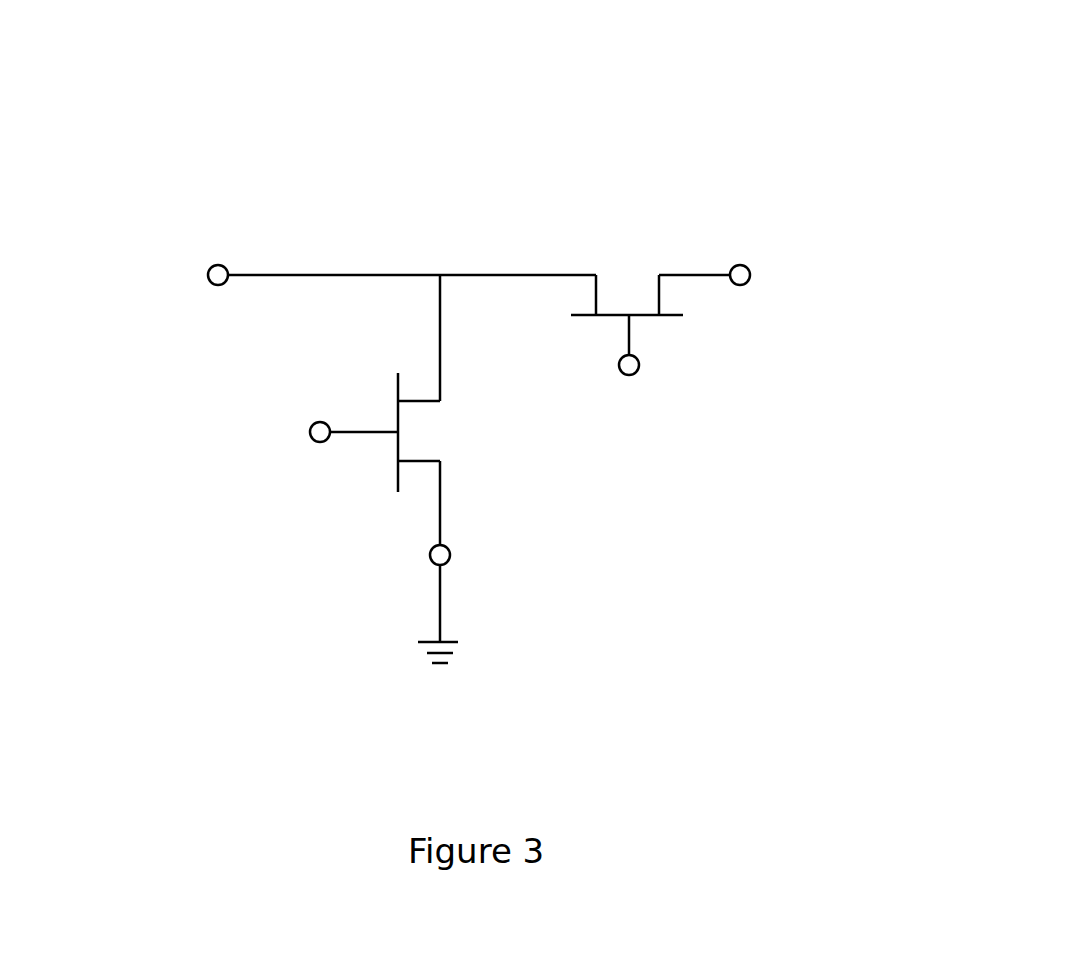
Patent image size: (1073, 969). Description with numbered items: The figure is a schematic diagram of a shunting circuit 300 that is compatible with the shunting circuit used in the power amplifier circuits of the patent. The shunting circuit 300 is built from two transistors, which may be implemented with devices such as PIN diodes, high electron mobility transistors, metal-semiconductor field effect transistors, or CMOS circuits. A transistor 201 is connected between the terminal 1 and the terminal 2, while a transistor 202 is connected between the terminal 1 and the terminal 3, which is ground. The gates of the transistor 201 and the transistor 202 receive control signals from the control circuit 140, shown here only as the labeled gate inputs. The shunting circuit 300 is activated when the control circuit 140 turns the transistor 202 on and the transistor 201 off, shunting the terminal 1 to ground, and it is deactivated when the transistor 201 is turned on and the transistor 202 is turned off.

The shunting circuit 300 is at (600, 357).
The transistor 201 is at (630, 247).
The transistor 202 is at (455, 444).
The terminal 1 is at (193, 278).
The terminal 2 is at (731, 274).
The terminal 3 is at (422, 602).
The control circuit 140 is at (463, 413).